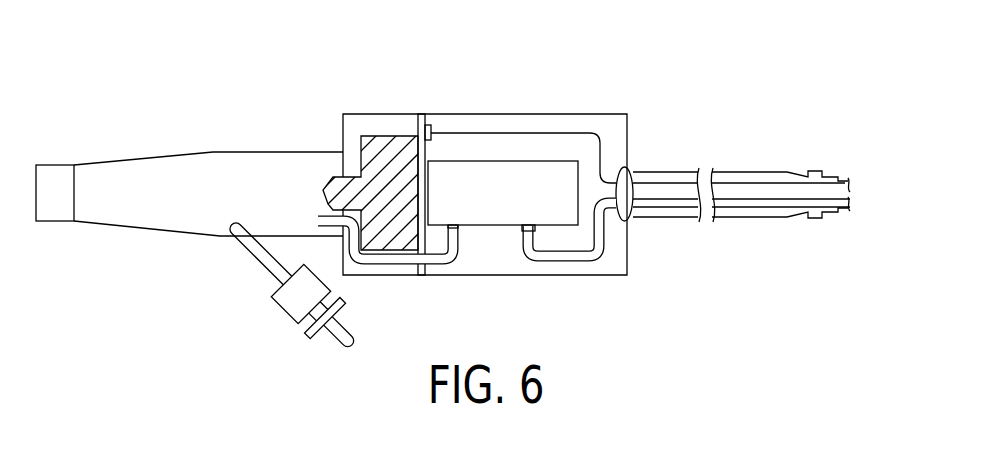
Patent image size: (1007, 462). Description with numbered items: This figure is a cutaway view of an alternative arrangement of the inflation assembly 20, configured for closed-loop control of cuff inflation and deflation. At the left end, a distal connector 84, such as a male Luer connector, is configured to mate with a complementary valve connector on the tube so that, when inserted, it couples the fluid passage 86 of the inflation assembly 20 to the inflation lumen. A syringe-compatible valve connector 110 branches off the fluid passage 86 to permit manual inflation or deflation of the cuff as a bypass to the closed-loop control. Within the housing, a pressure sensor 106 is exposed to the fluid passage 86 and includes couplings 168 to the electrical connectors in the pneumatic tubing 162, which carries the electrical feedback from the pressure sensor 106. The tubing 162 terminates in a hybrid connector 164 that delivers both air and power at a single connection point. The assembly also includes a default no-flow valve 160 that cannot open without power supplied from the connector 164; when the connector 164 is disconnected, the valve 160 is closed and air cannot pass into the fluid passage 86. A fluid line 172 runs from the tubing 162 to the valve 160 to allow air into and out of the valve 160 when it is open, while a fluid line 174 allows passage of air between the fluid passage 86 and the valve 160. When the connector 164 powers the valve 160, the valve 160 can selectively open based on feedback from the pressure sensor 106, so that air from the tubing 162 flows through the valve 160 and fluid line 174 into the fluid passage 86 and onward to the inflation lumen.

The inflation assembly 20 is at (117, 93).
The distal connector 84 is at (51, 224).
The fluid passage 86 is at (151, 230).
The pressure sensor 106 is at (378, 118).
The valve connector 110 is at (283, 300).
The valve 160 is at (493, 227).
The pneumatic tubing 162 is at (678, 223).
The hybrid connector 164 is at (816, 213).
The couplings 168 is at (431, 128).
The fluid line 172 is at (577, 262).
The fluid line 174 is at (398, 262).